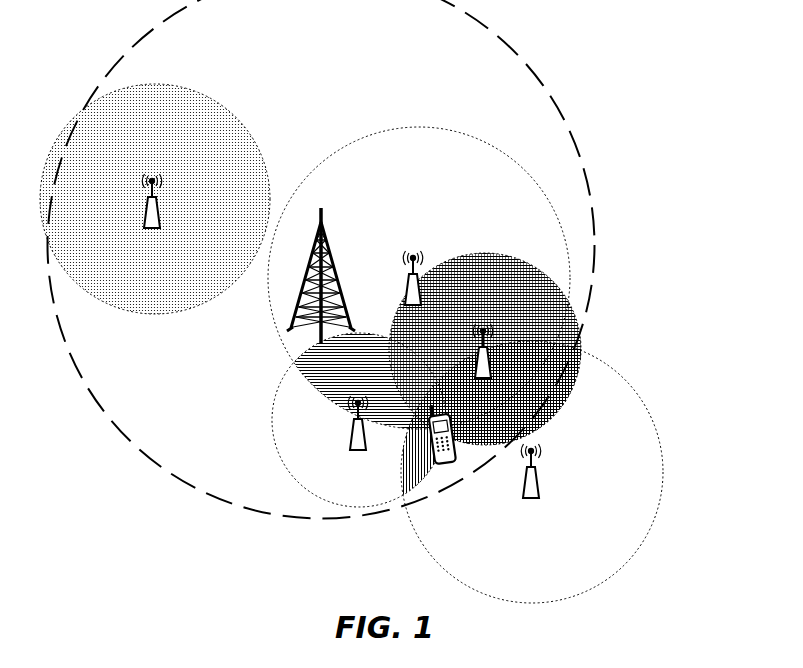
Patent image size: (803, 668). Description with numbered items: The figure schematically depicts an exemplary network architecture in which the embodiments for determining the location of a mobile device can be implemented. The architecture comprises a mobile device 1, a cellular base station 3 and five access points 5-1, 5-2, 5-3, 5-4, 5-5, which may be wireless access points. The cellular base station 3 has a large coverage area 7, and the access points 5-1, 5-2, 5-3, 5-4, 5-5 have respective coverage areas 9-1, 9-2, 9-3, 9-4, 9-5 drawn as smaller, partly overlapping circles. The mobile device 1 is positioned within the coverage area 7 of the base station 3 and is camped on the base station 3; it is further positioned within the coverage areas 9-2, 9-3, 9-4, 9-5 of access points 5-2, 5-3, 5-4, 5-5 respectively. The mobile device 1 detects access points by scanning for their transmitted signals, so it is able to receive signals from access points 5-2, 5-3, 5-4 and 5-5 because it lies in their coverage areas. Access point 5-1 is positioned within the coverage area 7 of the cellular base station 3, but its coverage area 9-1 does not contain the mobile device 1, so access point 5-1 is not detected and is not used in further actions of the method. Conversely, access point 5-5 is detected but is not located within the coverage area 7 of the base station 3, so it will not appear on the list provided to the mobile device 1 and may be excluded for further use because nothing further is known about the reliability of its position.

The mobile device 1 is at (456, 431).
The cellular base station 3 is at (330, 257).
The access point 5-1 is at (158, 200).
The access point 5-2 is at (418, 282).
The access point 5-3 is at (488, 355).
The access point 5-4 is at (350, 447).
The access point 5-5 is at (525, 492).
The coverage area 7 is at (563, 118).
The coverage area 9-1 is at (206, 97).
The coverage area 9-2 is at (436, 128).
The coverage area 9-3 is at (568, 300).
The coverage area 9-4 is at (273, 408).
The coverage area 9-5 is at (646, 408).